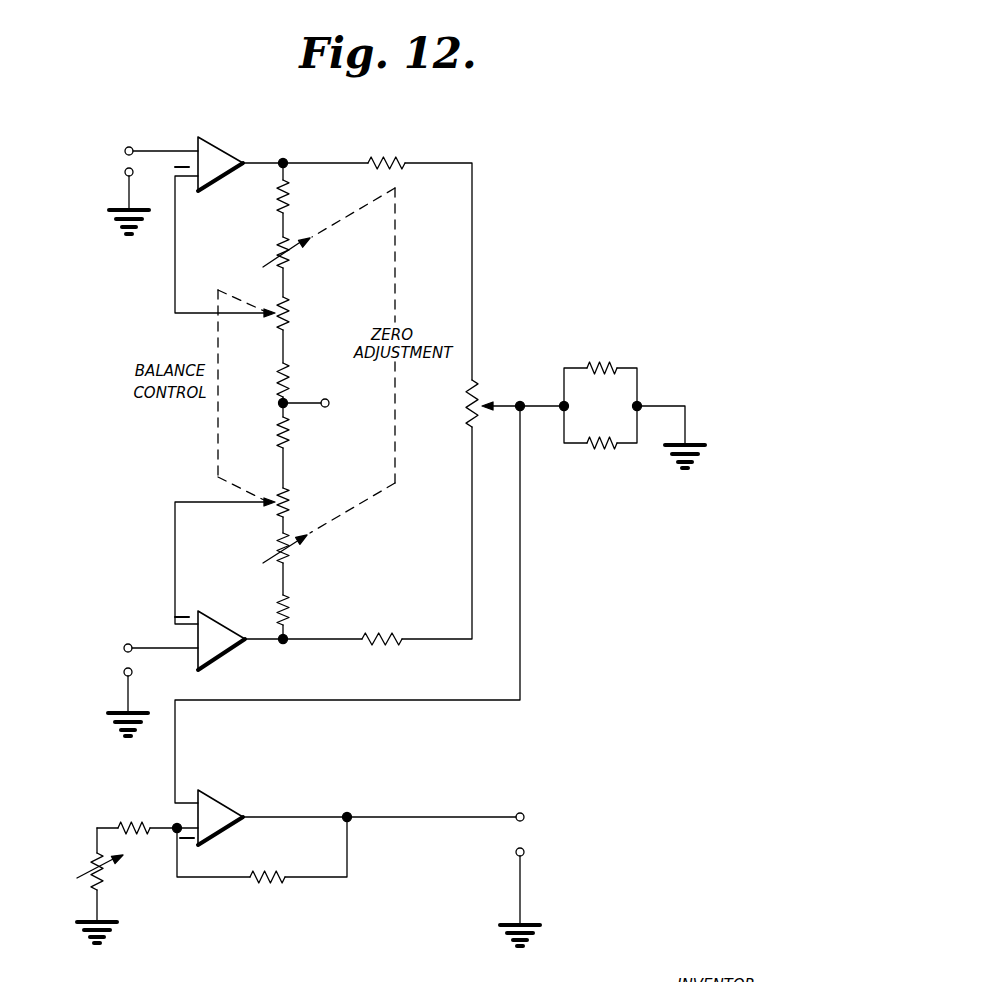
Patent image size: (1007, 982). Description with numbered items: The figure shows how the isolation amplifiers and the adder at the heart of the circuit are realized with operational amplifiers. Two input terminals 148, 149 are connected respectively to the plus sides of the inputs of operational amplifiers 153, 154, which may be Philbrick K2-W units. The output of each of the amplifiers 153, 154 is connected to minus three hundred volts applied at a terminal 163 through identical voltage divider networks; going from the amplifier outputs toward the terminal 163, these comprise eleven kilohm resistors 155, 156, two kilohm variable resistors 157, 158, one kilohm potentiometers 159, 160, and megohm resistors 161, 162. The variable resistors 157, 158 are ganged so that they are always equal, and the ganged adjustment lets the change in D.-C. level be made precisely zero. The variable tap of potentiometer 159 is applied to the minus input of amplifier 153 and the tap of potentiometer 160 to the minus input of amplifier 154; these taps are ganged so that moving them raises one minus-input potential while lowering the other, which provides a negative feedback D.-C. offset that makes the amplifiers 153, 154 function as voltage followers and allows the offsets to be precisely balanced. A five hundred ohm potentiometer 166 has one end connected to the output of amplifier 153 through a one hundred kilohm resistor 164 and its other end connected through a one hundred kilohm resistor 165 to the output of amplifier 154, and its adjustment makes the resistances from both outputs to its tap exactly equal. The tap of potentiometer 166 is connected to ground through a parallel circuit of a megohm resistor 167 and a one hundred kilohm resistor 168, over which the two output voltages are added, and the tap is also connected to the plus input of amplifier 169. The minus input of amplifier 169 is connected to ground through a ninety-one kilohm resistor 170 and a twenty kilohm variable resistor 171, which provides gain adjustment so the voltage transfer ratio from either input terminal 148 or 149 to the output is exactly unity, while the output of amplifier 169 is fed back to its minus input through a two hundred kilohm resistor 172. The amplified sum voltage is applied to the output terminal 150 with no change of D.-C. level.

The input terminal 148 is at (126, 147).
The input terminal 149 is at (126, 644).
The output terminal 150 is at (525, 813).
The operational amplifier 153 is at (225, 146).
The operational amplifier 154 is at (223, 650).
The 11 kilohm resistor 155 is at (289, 201).
The 11 kilohm resistor 156 is at (290, 611).
The 2 kilohm variable resistor 157 is at (281, 240).
The 2 kilohm variable resistor 158 is at (290, 561).
The 1 kilohm potentiometer 159 is at (289, 306).
The 1 kilohm potentiometer 160 is at (289, 489).
The megohm resistor 161 is at (281, 364).
The megohm resistor 162 is at (292, 446).
The terminal 163 is at (330, 406).
The 100 kilohm resistor 164 is at (407, 158).
The 100 kilohm resistor 165 is at (385, 645).
The 500 ohm potentiometer 166 is at (466, 405).
The megohm resistor 167 is at (613, 366).
The 100 kilohm resistor 168 is at (600, 446).
The amplifier 169 is at (225, 797).
The 91 kilohm resistor 170 is at (146, 808).
The 20 kilohm variable resistor 171 is at (105, 885).
The 200 kilohm resistor 172 is at (272, 881).